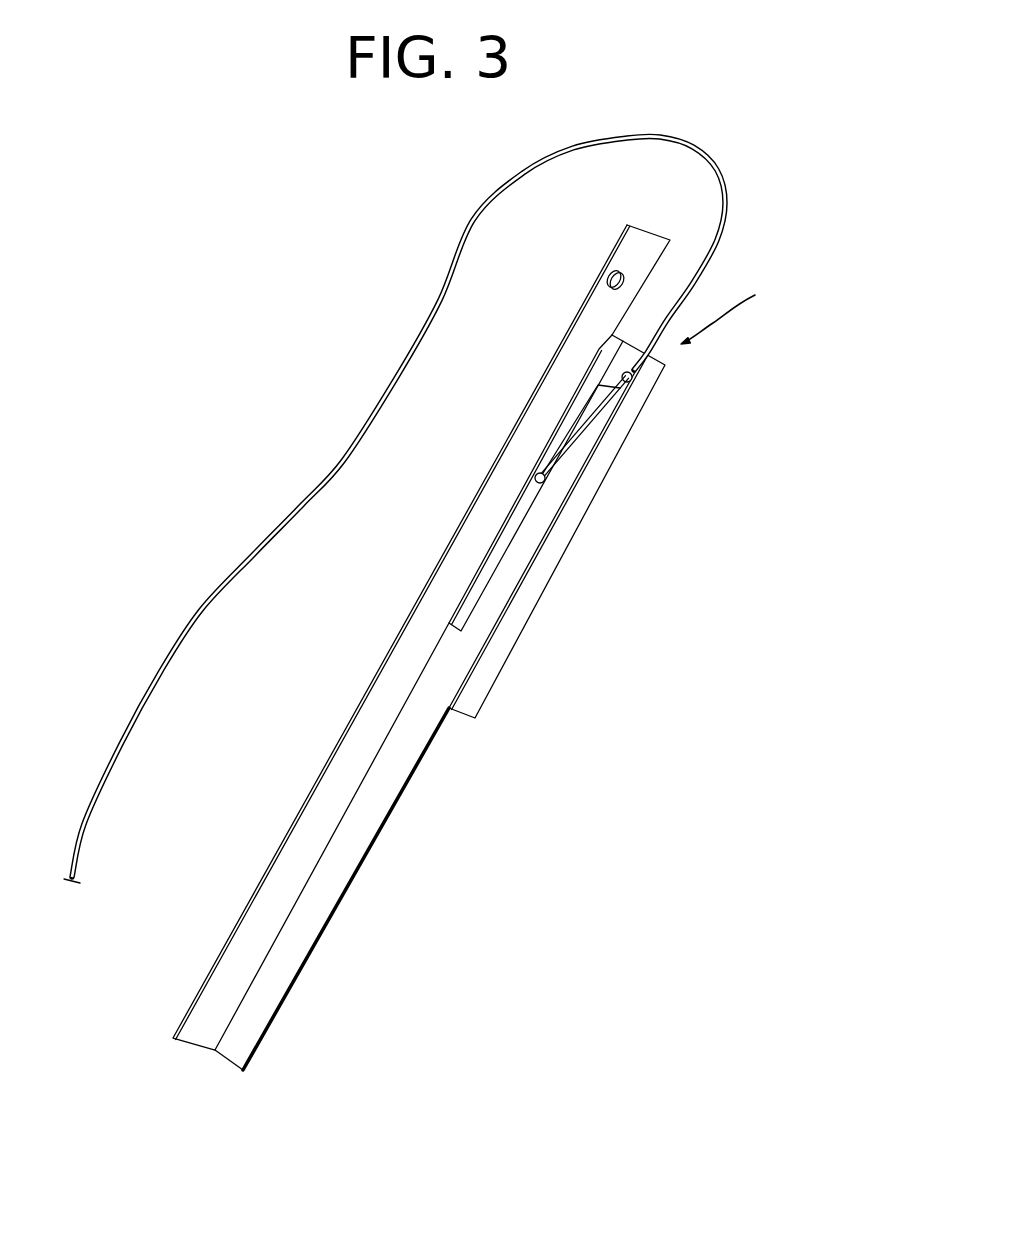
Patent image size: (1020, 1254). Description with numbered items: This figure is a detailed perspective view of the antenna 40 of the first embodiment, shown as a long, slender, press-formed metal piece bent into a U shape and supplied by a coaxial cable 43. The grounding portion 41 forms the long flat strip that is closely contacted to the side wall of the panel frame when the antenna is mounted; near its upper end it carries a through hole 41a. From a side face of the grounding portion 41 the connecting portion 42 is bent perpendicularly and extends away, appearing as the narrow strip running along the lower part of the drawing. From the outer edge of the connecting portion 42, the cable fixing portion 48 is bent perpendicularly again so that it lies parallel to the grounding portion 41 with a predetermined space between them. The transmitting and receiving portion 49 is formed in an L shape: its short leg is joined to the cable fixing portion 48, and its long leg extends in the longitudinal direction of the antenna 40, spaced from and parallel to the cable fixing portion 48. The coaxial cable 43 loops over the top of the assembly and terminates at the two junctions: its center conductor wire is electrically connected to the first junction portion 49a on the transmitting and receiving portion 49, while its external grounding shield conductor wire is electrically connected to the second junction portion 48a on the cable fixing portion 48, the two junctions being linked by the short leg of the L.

The antenna 40 is at (776, 290).
The grounding portion 41 is at (357, 730).
The through hole 41a is at (609, 286).
The connecting portion 42 is at (355, 856).
The coaxial cable 43 is at (438, 300).
The cable fixing portion 48 is at (537, 578).
The second junction portion 48a is at (634, 383).
The transmitting and receiving portion 49 is at (463, 630).
The first junction portion 49a is at (546, 484).